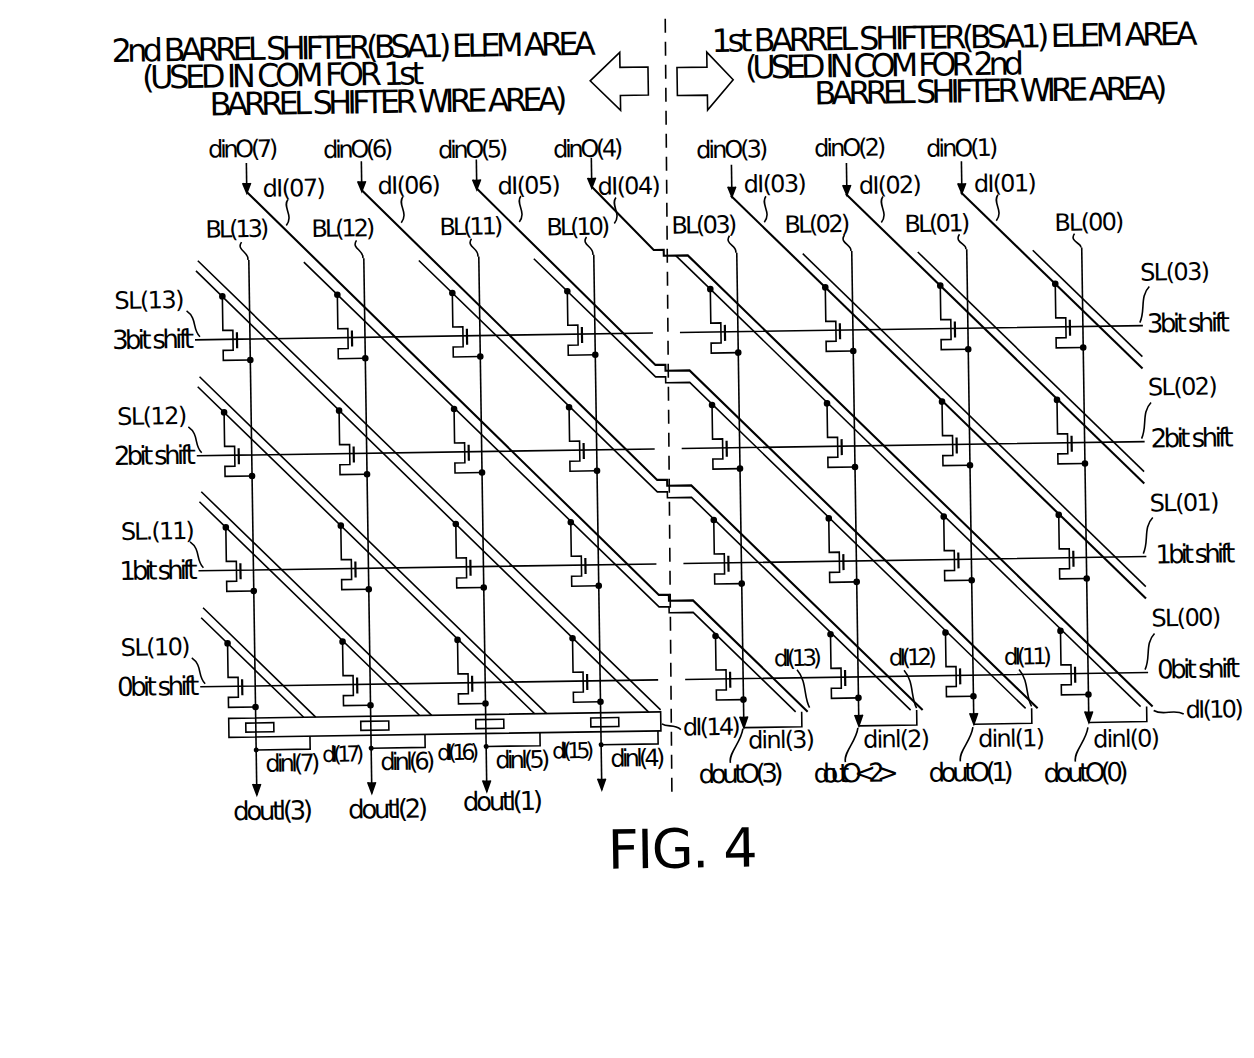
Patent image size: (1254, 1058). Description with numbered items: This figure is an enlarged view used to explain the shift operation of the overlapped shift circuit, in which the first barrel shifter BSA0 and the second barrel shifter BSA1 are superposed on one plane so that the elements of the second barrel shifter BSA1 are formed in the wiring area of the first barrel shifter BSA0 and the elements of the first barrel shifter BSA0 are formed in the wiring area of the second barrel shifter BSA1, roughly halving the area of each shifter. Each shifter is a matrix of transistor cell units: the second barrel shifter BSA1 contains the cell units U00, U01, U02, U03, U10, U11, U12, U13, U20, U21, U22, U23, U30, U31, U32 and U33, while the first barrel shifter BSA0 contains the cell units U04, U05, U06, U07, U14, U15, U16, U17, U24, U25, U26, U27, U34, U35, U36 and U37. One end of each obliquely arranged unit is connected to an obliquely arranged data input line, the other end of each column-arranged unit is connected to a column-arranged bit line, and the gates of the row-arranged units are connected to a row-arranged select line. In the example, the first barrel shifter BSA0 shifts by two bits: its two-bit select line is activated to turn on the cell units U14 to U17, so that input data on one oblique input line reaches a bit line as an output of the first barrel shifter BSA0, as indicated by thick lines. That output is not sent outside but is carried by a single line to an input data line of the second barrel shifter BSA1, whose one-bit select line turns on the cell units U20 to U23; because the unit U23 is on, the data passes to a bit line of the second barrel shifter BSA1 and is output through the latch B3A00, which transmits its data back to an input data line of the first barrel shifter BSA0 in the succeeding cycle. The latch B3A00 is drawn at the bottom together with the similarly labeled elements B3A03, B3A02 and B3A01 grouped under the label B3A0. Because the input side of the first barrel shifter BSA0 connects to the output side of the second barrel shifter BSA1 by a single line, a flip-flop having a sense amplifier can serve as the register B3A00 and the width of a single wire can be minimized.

The second barrel shifter BSA1 is at (150, 190).
The first barrel shifter BSA0 is at (1179, 205).
The output buffer block B3A0 is at (236, 738).
The buffer cell B3A03 is at (266, 723).
The buffer cell B3A02 is at (381, 723).
The buffer cell B3A01 is at (496, 723).
The latch B3A00 is at (611, 723).
The transistor unit cell U00 is at (255, 322).
The transistor unit cell U01 is at (370, 321).
The transistor unit cell U02 is at (485, 319).
The transistor unit cell U03 is at (600, 317).
The transistor unit cell U04 is at (743, 315).
The transistor unit cell U05 is at (858, 313).
The transistor unit cell U06 is at (973, 312).
The transistor unit cell U07 is at (1088, 310).
The transistor unit cell U10 is at (256, 438).
The transistor unit cell U11 is at (371, 437).
The transistor unit cell U12 is at (486, 435).
The transistor unit cell U13 is at (601, 433).
The cell unit U14 is at (744, 431).
The cell unit U15 is at (859, 429).
The cell unit U16 is at (974, 428).
The cell unit U17 is at (1089, 426).
The cell unit U20 is at (258, 553).
The cell unit U21 is at (373, 552).
The cell unit U22 is at (488, 550).
The cell unit U23 is at (603, 548).
The transistor unit cell U24 is at (746, 546).
The transistor unit cell U25 is at (861, 544).
The transistor unit cell U26 is at (976, 543).
The transistor unit cell U27 is at (1091, 541).
The transistor unit cell U30 is at (260, 669).
The transistor unit cell U31 is at (375, 668).
The transistor unit cell U32 is at (490, 666).
The transistor unit cell U33 is at (605, 664).
The transistor unit cell U34 is at (748, 662).
The transistor unit cell U35 is at (863, 660).
The transistor unit cell U36 is at (978, 659).
The transistor unit cell U37 is at (1093, 657).